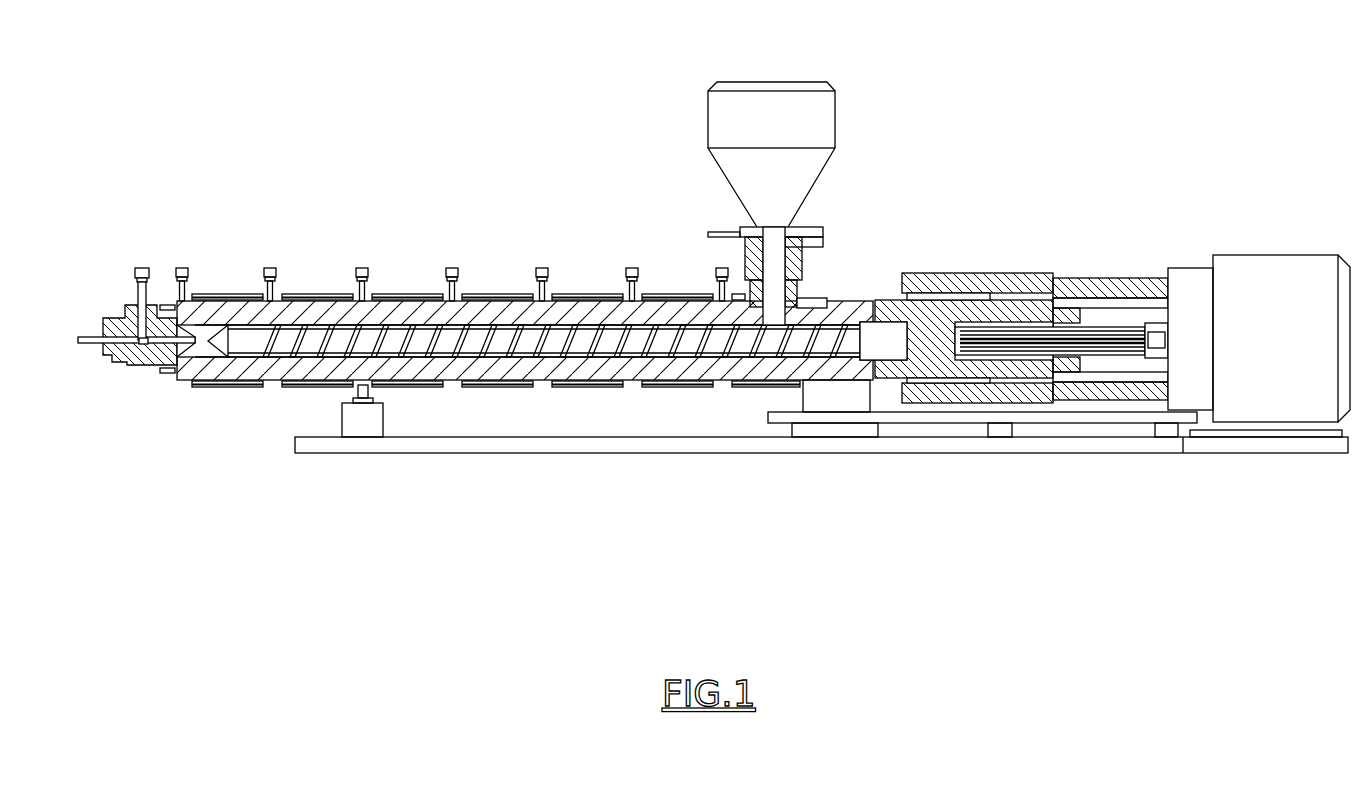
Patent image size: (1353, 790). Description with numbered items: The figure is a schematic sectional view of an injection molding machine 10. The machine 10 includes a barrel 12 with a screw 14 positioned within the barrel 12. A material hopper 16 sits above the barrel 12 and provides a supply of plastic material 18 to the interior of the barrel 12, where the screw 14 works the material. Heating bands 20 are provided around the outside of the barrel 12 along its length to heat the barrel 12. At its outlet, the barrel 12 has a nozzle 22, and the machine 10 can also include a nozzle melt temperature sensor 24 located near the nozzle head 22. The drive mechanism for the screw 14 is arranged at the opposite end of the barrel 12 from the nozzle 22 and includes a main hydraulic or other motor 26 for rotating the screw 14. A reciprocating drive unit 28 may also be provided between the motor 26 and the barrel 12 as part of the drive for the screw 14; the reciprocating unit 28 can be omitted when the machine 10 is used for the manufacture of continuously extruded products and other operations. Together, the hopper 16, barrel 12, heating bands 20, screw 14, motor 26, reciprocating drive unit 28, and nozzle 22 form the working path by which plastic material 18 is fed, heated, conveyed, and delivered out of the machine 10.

The injection molding machine 10 is at (288, 152).
The barrel 12 is at (496, 318).
The screw 14 is at (412, 343).
The material hopper 16 is at (735, 178).
The plastic material 18 is at (775, 262).
The heating bands 20 is at (320, 298).
The nozzle 22 is at (118, 330).
The nozzle melt temperature sensor 24 is at (143, 268).
The motor 26 is at (1252, 272).
The reciprocating drive unit 28 is at (1013, 372).